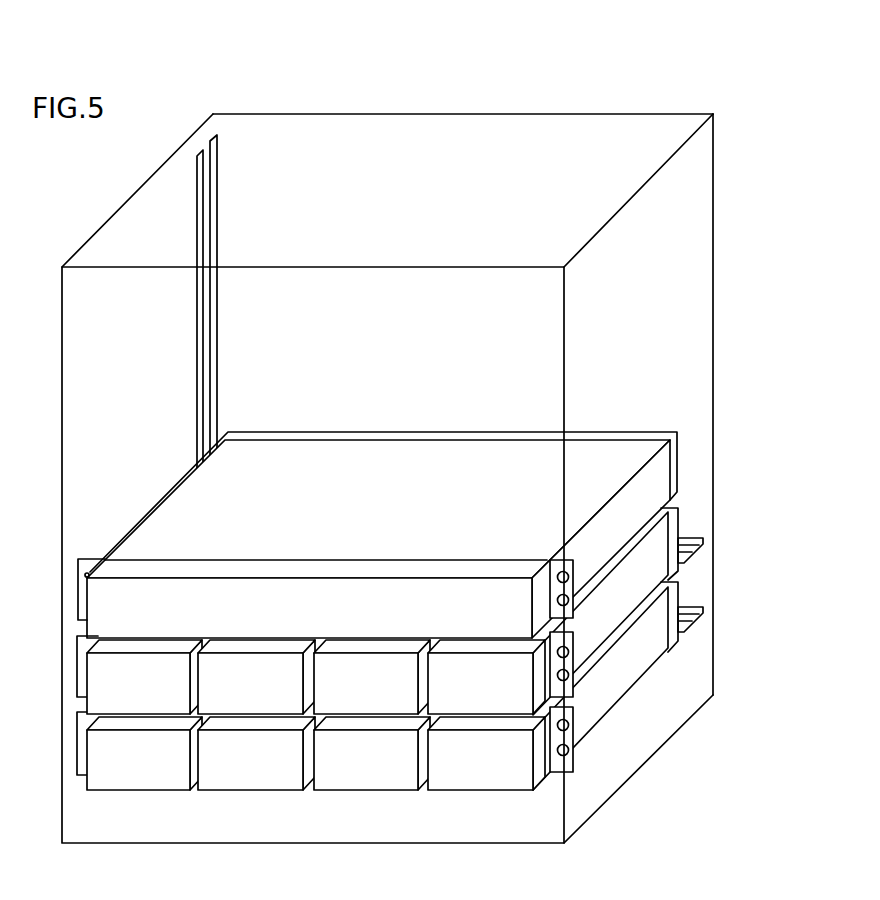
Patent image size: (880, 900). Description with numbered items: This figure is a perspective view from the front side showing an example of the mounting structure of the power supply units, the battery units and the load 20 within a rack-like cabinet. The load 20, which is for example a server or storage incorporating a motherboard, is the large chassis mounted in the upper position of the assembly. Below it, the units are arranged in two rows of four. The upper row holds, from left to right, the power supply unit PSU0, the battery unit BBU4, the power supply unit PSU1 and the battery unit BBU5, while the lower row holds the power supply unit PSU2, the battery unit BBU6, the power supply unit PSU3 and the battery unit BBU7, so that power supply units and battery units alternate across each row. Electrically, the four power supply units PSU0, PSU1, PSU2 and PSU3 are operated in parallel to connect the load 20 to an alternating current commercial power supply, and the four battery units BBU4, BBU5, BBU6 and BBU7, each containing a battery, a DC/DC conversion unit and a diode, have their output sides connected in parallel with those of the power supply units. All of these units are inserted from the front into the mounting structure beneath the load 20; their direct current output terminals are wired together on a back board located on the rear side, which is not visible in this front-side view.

The load 20 is at (403, 497).
The power supply unit PSU0 is at (144, 677).
The battery unit BBU4 is at (256, 677).
The power supply unit PSU1 is at (372, 677).
The battery unit BBU5 is at (486, 677).
The power supply unit PSU2 is at (144, 753).
The battery unit BBU6 is at (256, 753).
The power supply unit PSU3 is at (372, 753).
The battery unit BBU7 is at (486, 753).